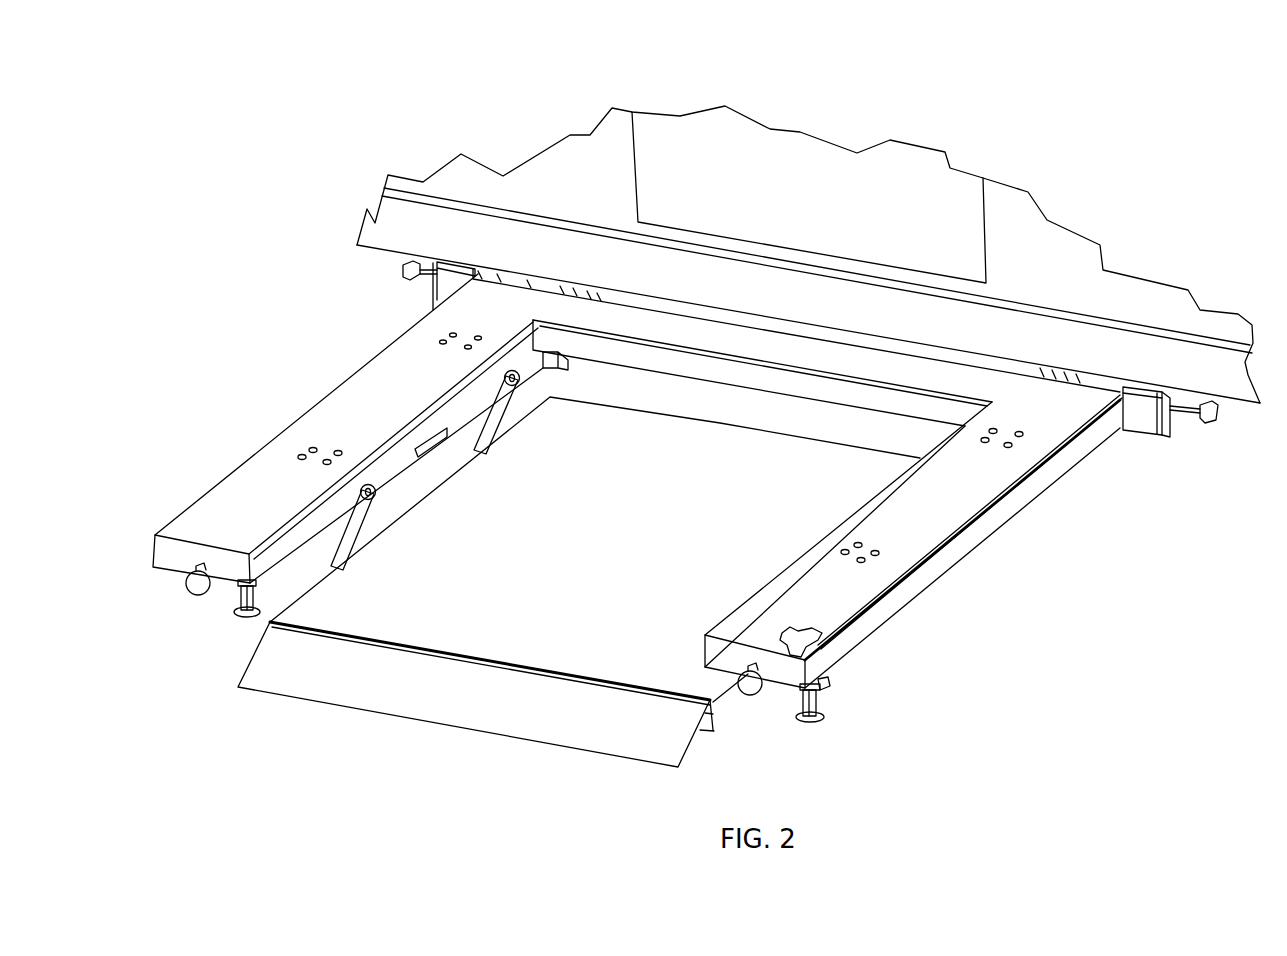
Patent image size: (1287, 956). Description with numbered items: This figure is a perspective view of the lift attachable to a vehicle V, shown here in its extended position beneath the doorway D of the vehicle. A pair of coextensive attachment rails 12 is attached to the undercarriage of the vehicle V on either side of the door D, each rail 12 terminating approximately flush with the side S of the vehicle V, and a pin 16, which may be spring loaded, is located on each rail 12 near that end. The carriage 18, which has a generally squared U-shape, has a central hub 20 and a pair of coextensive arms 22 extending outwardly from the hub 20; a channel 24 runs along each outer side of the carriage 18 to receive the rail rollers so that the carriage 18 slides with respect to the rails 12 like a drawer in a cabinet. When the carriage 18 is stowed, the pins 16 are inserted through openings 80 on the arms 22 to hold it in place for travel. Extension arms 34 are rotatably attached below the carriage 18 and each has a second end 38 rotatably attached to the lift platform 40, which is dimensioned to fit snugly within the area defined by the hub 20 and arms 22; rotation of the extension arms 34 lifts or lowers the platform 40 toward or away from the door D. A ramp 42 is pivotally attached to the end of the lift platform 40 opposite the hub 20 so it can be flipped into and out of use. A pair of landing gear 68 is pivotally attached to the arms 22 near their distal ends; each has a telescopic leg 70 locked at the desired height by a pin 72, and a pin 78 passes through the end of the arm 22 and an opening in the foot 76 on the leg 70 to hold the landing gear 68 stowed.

The vehicle V is at (584, 102).
The door D is at (821, 165).
The side of the vehicle S is at (1008, 211).
The attachment rail 12 is at (433, 295).
The pin 16 is at (405, 268).
The carriage 18 is at (674, 533).
The central hub 20 is at (915, 368).
The arm 22 is at (214, 518).
The channel 24 is at (866, 631).
The extension arm 34 is at (520, 422).
The second end 38 is at (518, 377).
The lift platform 40 is at (583, 662).
The ramp 42 is at (405, 692).
The landing gear 68 is at (533, 684).
The leg 70 is at (746, 697).
The pin 72 is at (834, 688).
The foot 76 is at (247, 618).
The pin 78 is at (188, 594).
The opening 80 is at (800, 625).